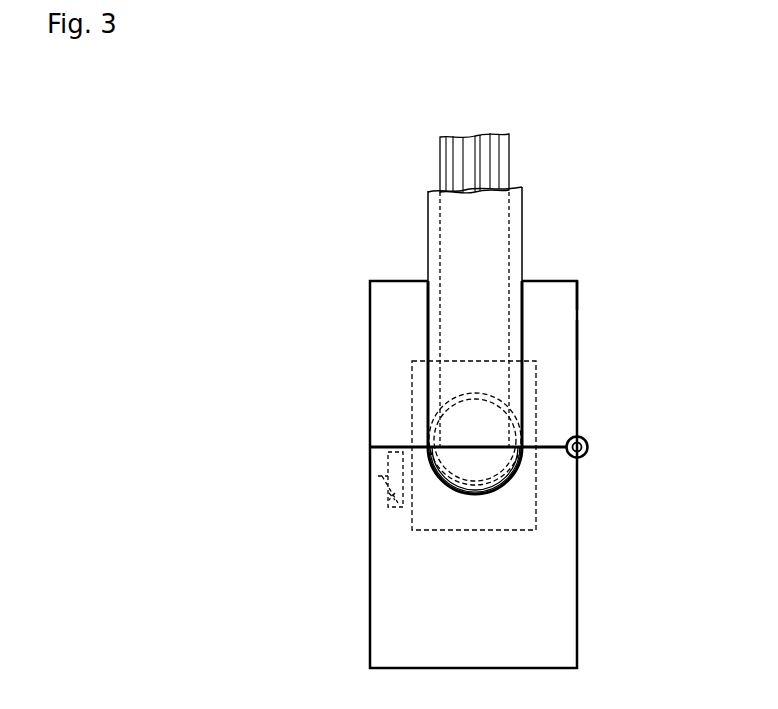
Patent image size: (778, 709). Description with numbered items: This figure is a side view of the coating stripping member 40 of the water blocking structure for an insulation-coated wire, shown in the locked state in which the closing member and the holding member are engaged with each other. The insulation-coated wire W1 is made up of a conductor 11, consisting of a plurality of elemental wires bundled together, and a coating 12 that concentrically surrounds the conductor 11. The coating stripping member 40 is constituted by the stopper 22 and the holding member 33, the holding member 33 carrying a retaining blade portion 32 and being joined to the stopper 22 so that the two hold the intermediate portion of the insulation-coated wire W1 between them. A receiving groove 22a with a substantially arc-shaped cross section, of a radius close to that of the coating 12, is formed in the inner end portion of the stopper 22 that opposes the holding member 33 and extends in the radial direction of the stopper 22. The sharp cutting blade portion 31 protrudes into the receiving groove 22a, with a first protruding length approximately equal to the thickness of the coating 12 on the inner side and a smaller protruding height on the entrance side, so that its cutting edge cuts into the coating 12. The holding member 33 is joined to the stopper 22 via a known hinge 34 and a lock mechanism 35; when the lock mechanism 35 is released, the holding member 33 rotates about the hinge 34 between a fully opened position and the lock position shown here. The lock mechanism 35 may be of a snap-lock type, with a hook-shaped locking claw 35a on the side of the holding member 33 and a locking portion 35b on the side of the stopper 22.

The conductor 11 is at (510, 165).
The coating 12 is at (523, 226).
The insulation-coated wire W1 is at (426, 229).
The coating stripping member 40 is at (599, 289).
The stopper 22 is at (568, 593).
The receiving groove 22a is at (475, 497).
The cutting blade portion 31 is at (535, 487).
The retaining blade portion 32 is at (536, 392).
The holding member 33 is at (577, 333).
The hinge 34 is at (589, 447).
The lock mechanism 35 is at (364, 472).
The locking claw 35a is at (385, 506).
The locking portion 35b is at (382, 462).